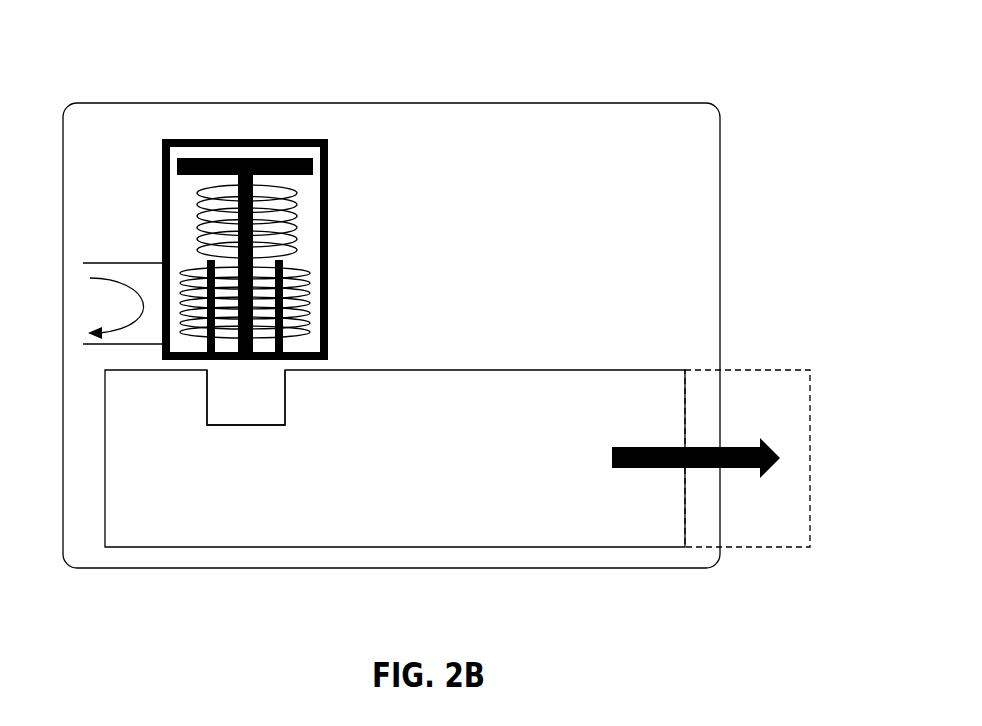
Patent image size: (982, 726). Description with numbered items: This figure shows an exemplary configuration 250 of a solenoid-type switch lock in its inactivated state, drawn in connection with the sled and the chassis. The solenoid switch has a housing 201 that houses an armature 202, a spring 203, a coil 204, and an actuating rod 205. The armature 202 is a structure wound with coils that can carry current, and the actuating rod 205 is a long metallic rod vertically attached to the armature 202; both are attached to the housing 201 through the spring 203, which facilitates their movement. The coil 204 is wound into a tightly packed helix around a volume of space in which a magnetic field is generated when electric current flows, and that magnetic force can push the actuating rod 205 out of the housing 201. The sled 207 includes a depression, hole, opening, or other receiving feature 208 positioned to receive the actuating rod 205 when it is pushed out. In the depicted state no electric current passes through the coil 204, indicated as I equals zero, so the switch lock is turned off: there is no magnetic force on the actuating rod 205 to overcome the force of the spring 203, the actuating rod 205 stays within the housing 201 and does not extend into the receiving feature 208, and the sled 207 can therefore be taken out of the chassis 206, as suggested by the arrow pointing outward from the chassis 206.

The configuration 250 is at (525, 73).
The housing 201 is at (312, 138).
The armature 202 is at (313, 162).
The spring 203 is at (298, 210).
The coil 204 is at (310, 302).
The actuating rod 205 is at (243, 362).
The chassis 206 is at (391, 335).
The sled 207 is at (457, 458).
The receiving feature 208 is at (247, 428).